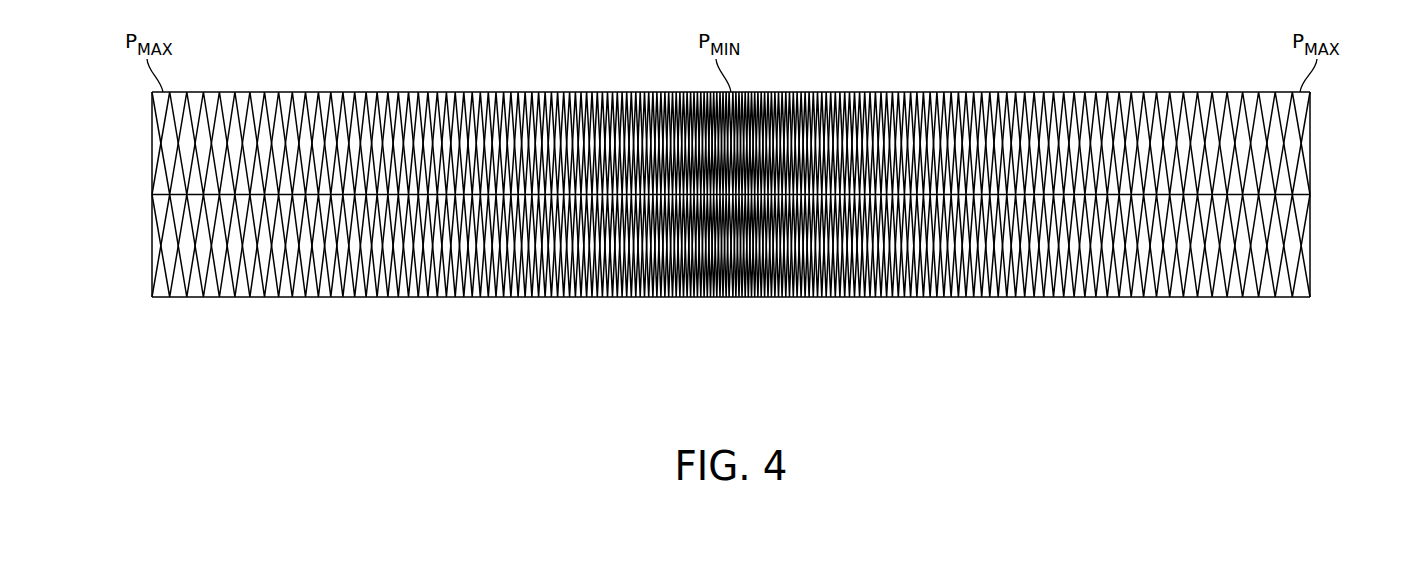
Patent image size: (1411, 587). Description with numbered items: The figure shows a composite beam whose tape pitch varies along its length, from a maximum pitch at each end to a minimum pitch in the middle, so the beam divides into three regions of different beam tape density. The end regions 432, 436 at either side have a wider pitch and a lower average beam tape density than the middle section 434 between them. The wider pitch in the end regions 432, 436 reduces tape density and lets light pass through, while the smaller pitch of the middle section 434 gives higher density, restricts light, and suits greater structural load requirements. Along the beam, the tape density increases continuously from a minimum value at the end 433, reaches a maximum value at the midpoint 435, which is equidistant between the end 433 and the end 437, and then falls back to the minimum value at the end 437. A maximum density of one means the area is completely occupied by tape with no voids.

The end region 432 is at (152, 308).
The end 433 is at (152, 203).
The middle section 434 is at (1042, 308).
The midpoint 435 is at (782, 298).
The end region 436 is at (1310, 308).
The end 437 is at (1310, 207).